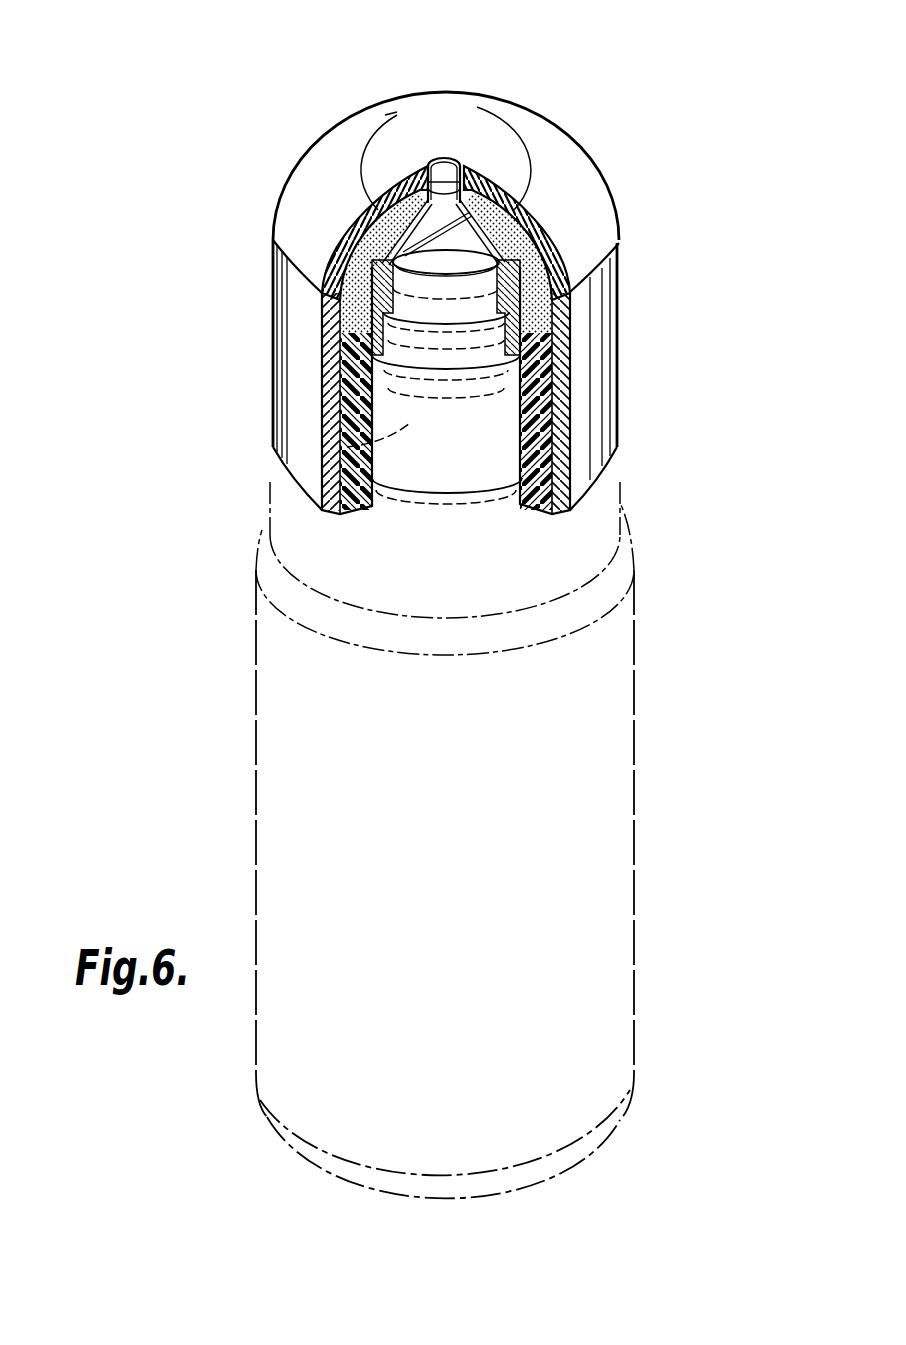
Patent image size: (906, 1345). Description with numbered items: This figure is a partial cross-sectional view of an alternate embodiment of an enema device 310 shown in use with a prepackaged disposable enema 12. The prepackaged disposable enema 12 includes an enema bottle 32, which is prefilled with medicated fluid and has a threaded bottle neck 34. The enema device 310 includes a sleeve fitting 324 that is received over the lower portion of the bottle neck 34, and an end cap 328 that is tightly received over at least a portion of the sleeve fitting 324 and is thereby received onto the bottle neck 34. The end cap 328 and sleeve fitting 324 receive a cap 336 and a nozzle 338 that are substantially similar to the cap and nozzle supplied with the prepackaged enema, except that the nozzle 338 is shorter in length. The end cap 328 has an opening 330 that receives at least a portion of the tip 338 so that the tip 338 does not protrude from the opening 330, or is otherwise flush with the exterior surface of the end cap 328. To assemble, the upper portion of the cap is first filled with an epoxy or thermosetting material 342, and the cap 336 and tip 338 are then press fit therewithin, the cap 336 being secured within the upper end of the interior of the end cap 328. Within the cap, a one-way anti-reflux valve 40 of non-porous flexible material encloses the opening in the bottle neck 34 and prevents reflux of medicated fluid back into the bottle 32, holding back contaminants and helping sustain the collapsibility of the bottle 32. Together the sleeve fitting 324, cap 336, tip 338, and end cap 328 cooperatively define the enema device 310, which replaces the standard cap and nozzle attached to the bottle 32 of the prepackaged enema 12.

The enema device 310 is at (194, 96).
The end cap 328 is at (588, 153).
The epoxy or thermosetting material 342 is at (337, 279).
The cap 336 is at (545, 322).
The sleeve fitting 324 is at (358, 505).
The nozzle 338 is at (445, 158).
The opening 330 is at (452, 160).
The one-way anti-reflux valve 40 is at (505, 228).
The bottle neck 34 is at (365, 447).
The enema bottle 32 is at (262, 718).
The prepackaged disposable enema 12 is at (660, 803).